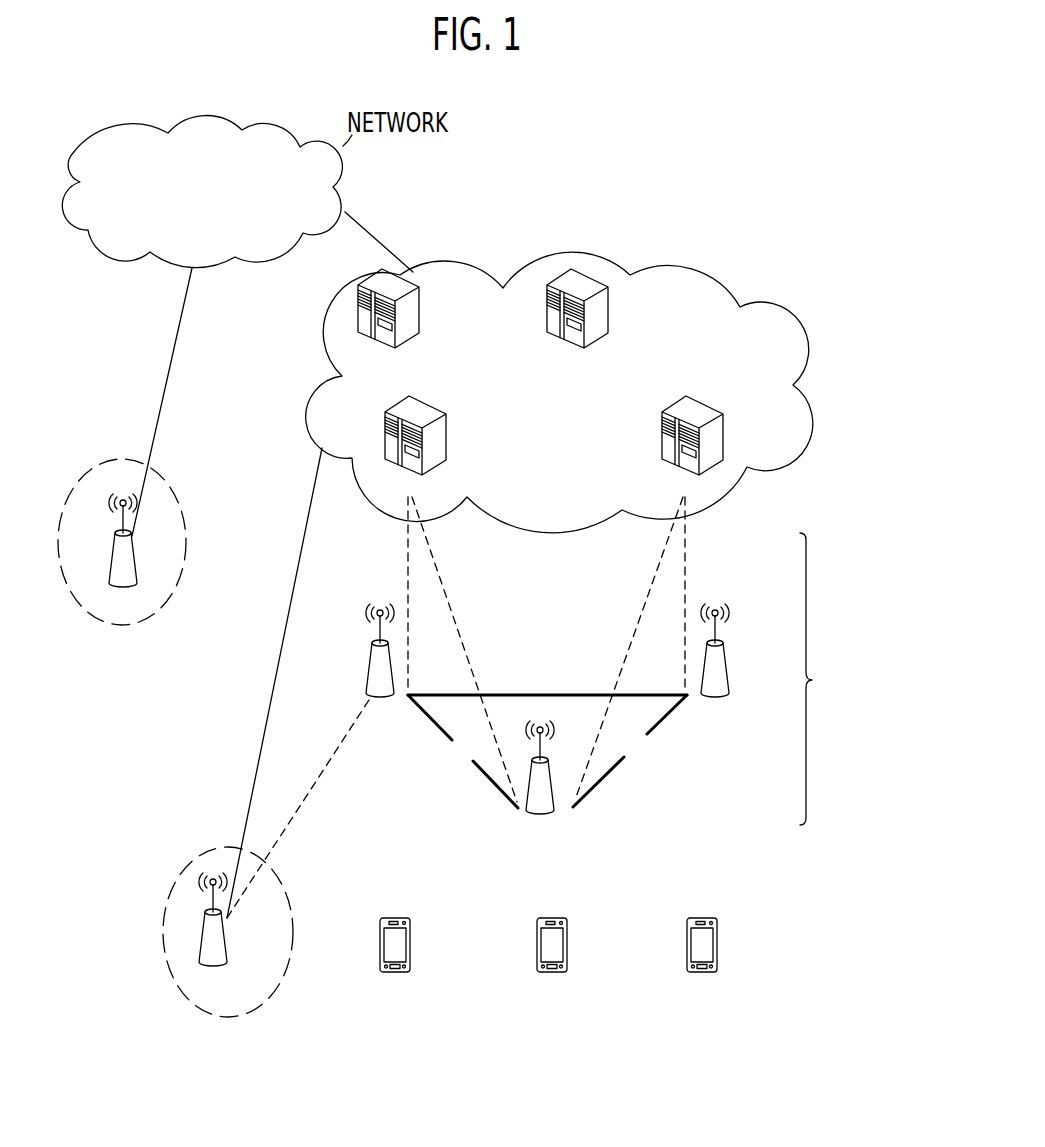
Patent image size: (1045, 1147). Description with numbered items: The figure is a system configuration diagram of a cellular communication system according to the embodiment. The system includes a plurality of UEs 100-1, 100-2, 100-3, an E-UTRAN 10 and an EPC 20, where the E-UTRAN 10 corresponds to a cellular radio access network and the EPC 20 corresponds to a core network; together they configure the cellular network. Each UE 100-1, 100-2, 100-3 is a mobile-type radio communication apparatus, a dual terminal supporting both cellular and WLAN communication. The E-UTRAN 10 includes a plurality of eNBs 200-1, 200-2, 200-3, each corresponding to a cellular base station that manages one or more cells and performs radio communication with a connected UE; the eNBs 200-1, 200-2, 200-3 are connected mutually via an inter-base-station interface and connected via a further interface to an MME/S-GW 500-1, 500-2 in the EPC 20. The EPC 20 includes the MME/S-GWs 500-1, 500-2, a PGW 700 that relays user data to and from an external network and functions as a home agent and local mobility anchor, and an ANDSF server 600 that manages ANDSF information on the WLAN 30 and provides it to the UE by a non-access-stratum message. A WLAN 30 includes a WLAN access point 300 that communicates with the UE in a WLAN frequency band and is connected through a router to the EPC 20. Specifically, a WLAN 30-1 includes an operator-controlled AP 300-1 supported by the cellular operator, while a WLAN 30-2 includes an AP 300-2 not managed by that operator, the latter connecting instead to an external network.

The E-UTRAN 10 is at (592, 672).
The EPC 20 is at (726, 281).
The WLAN 30 is at (175, 776).
The WLAN 30-1 is at (197, 1012).
The WLAN 30-2 is at (133, 574).
The UE 100-1 is at (399, 917).
The UE 100-2 is at (553, 917).
The UE 100-3 is at (705, 917).
The eNB 200-1 is at (368, 672).
The eNB 200-2 is at (555, 793).
The eNB 200-3 is at (722, 660).
The WLAN access point 300 is at (246, 766).
The WLAN access point 300-1 is at (228, 945).
The WLAN access point 300-2 is at (134, 545).
The MME/S-GW 500-1 is at (430, 401).
The MME/S-GW 500-2 is at (712, 388).
The ANDSF server 600 is at (609, 306).
The PGW 700 is at (421, 306).